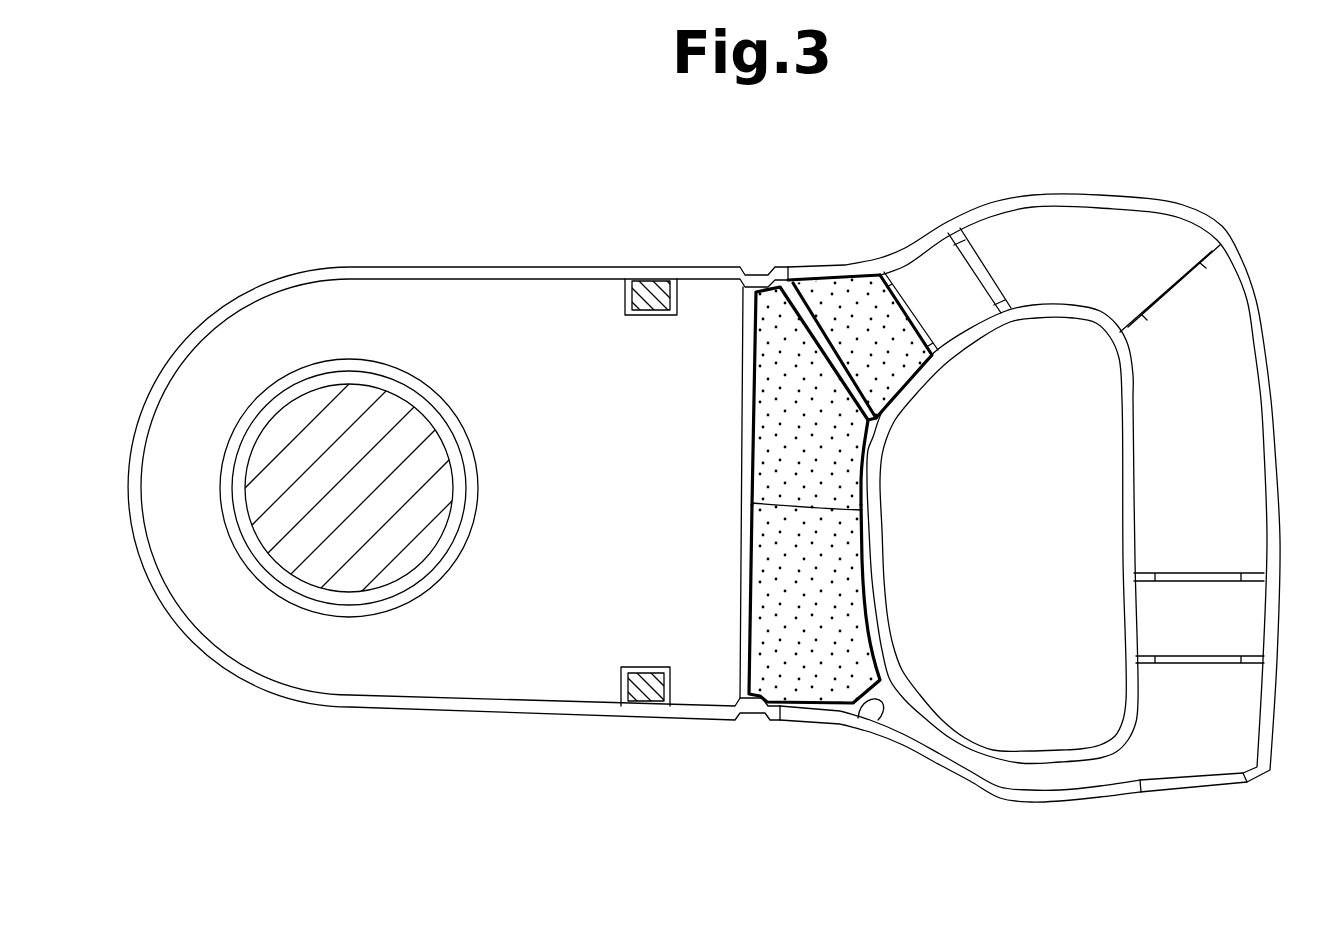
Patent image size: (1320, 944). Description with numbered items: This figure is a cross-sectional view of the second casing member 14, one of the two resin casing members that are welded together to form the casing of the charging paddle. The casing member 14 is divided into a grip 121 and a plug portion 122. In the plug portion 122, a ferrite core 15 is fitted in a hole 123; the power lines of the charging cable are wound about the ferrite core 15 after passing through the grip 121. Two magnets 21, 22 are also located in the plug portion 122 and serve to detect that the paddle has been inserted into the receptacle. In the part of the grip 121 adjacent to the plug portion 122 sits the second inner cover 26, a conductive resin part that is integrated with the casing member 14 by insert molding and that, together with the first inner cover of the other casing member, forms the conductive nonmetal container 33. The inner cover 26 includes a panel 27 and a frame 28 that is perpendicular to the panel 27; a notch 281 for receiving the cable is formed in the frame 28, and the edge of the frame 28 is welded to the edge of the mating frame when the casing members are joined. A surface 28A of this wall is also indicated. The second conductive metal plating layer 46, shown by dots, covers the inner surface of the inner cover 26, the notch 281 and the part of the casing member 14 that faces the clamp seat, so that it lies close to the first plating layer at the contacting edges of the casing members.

The second casing member 14 is at (495, 687).
The ferrite core 15 is at (353, 578).
The magnet 21 is at (655, 290).
The magnet 22 is at (640, 703).
The second inner cover 26 is at (747, 495).
The panel 27 is at (770, 463).
The frame 28 is at (777, 590).
The wall surface 28A is at (742, 386).
The container 33 is at (876, 716).
The second conductive metal plating layer 46 is at (903, 362).
The grip 121 is at (747, 827).
The plug portion 122 is at (125, 819).
The hole 123 is at (445, 515).
The notch 281 is at (832, 345).